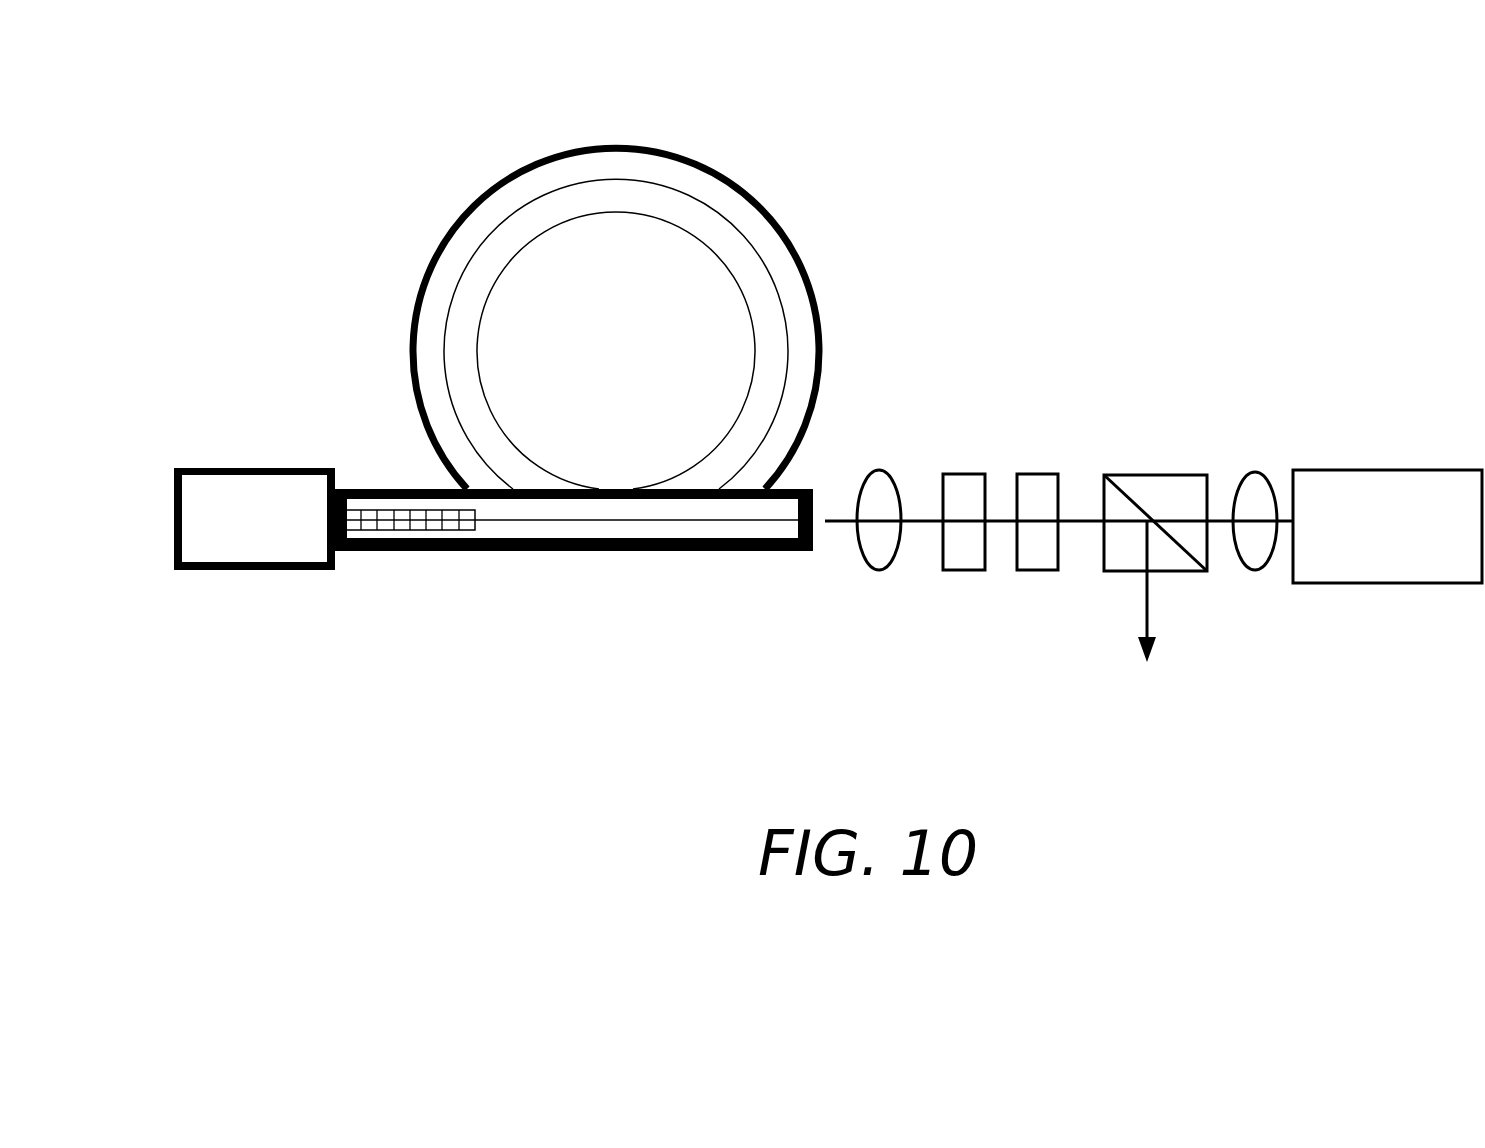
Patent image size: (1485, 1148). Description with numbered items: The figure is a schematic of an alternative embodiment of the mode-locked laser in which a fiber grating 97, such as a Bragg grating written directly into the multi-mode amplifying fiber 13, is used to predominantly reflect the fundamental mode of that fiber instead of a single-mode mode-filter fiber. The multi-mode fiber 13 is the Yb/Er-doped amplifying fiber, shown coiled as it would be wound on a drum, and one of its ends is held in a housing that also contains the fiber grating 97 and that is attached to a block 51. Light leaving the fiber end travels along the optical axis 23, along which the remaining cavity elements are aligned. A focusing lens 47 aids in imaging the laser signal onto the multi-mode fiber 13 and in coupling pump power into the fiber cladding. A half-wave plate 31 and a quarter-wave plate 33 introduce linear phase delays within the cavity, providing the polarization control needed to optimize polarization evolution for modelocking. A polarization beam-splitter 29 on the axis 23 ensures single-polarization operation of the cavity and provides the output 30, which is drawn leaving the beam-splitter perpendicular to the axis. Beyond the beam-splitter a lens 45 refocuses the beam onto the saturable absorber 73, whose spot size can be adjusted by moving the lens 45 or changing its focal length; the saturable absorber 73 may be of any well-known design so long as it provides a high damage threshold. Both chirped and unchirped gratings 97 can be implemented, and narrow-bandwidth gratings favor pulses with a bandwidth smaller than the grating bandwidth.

The multi-mode amplifying fiber 13 is at (798, 258).
The fiber holder / source block 51 is at (256, 468).
The optical axis 23 is at (843, 523).
The fiber grating 97 is at (412, 550).
The focusing lens 47 is at (878, 465).
The half-wave plate 31 is at (963, 474).
The quarter-wave plate 33 is at (1038, 570).
The polarization beam-splitter 29 is at (1155, 475).
The output 30 is at (1150, 605).
The lens 45 is at (1253, 466).
The saturable absorber 73 is at (1387, 470).